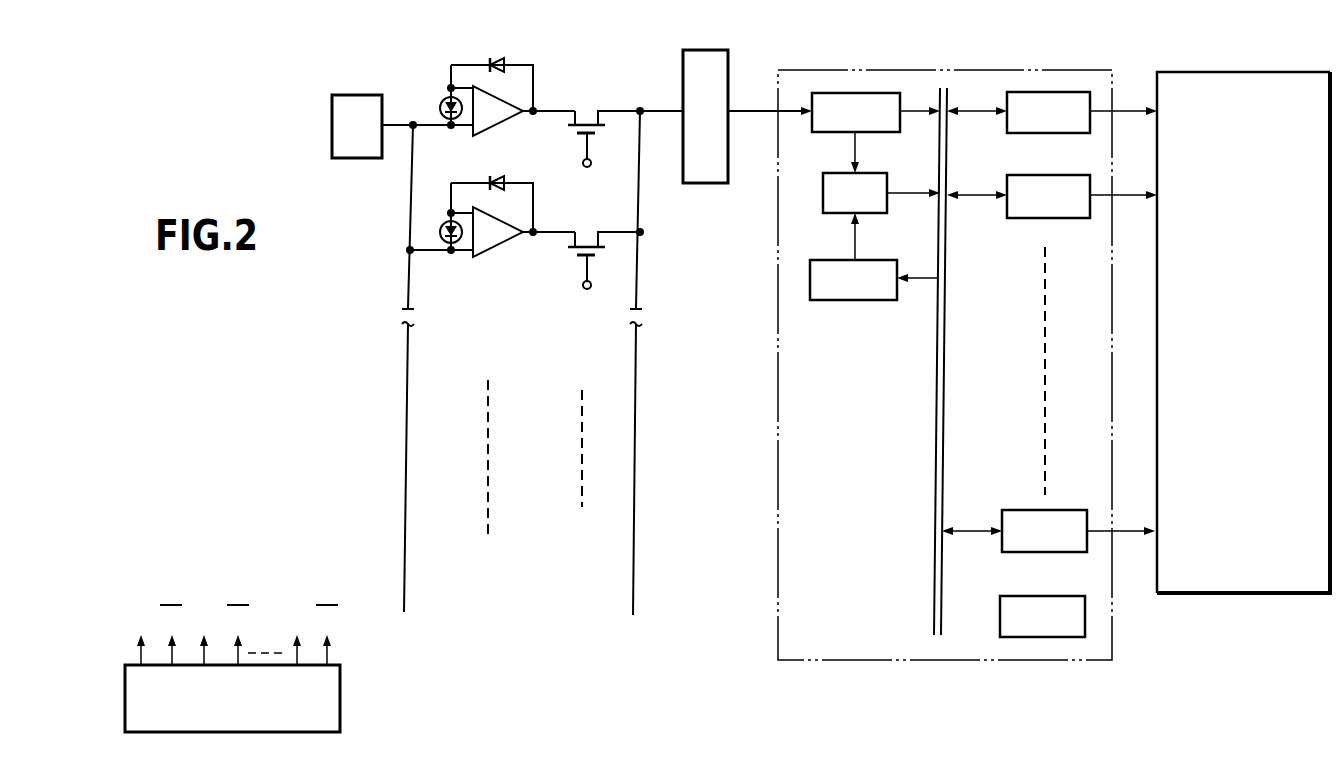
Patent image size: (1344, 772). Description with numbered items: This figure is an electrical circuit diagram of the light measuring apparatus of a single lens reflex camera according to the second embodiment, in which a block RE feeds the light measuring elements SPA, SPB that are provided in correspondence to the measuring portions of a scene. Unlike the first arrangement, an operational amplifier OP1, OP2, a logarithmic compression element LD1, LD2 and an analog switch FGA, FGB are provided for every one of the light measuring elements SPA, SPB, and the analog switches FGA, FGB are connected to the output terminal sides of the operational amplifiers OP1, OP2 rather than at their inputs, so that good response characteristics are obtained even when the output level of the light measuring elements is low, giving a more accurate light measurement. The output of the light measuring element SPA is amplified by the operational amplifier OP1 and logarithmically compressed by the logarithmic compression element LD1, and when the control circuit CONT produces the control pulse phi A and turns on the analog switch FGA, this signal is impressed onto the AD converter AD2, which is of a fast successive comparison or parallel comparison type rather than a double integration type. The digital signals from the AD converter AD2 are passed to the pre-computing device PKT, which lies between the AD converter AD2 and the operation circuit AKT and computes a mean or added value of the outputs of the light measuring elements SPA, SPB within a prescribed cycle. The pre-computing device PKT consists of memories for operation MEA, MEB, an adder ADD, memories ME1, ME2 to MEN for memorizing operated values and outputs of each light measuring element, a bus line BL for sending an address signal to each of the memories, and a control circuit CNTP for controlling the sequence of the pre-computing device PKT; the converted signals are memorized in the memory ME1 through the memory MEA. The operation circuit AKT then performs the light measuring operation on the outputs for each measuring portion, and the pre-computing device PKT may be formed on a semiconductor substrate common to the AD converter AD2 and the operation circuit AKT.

The reading element RE is at (357, 126).
The light measuring element SPA is at (438, 98).
The light measuring element SPB is at (438, 214).
The operational amplifier OP1 is at (524, 111).
The operational amplifier OP2 is at (524, 232).
The logarithmic compression element LD1 is at (497, 58).
The logarithmic compression element LD2 is at (499, 177).
The analog switch FGA is at (586, 118).
The analog switch FGB is at (585, 239).
The AD converter AD2 is at (726, 116).
The pre-computing device PKT is at (953, 70).
The memory for operation MEA is at (876, 133).
The memory for operation MEB is at (874, 256).
The adder ADD is at (881, 193).
The bus line BL is at (933, 577).
The memory ME1 is at (1052, 112).
The memory ME2 is at (1052, 196).
The memory MEN is at (1048, 531).
The control circuit CNTP is at (1042, 616).
The operation circuit AKT is at (1243, 332).
The control circuit CONT is at (340, 708).